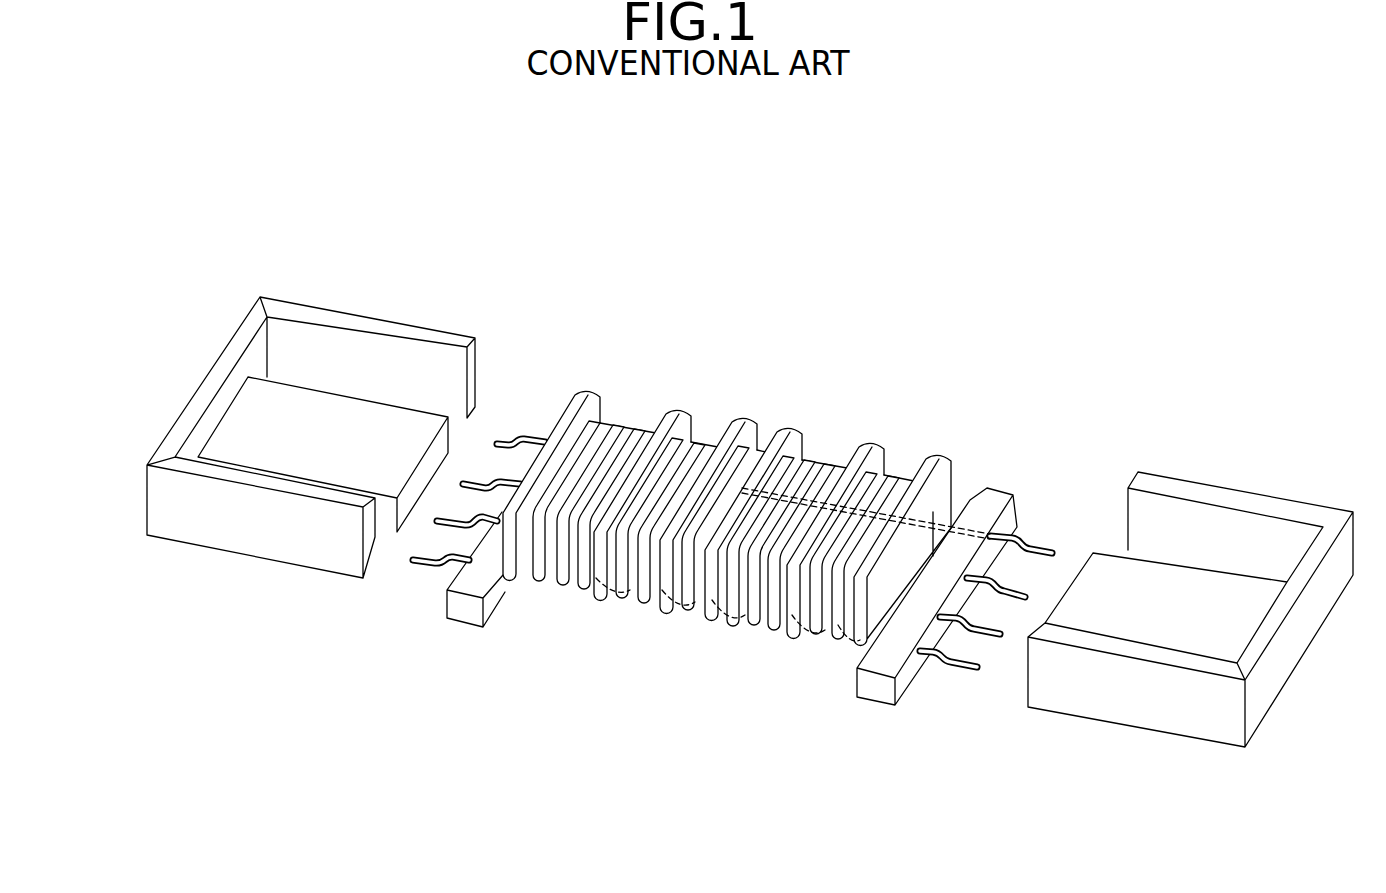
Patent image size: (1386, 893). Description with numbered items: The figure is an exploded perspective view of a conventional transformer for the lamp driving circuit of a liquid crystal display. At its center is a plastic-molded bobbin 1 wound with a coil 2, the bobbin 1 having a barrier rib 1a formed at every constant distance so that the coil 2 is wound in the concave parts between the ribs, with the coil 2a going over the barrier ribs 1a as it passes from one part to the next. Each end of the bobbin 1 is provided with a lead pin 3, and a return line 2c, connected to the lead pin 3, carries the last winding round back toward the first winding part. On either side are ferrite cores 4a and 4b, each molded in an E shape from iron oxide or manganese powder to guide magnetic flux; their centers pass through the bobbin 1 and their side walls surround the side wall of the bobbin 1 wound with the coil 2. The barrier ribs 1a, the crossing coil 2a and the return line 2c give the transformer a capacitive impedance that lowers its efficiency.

The bobbin 1 is at (875, 703).
The barrier rib 1a is at (742, 415).
The coil 2 is at (632, 423).
The coil going over the barrier ribs 2a is at (619, 601).
The return line 2c is at (974, 533).
The lead pin 3 is at (1046, 551).
The ferrite core 4a is at (273, 545).
The ferrite core 4b is at (1123, 723).